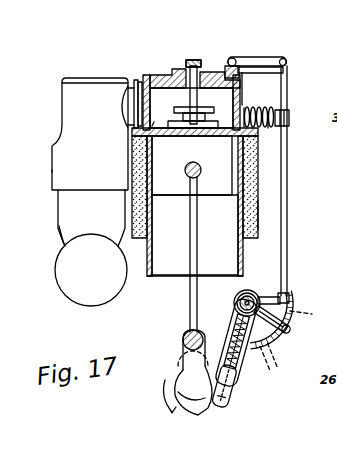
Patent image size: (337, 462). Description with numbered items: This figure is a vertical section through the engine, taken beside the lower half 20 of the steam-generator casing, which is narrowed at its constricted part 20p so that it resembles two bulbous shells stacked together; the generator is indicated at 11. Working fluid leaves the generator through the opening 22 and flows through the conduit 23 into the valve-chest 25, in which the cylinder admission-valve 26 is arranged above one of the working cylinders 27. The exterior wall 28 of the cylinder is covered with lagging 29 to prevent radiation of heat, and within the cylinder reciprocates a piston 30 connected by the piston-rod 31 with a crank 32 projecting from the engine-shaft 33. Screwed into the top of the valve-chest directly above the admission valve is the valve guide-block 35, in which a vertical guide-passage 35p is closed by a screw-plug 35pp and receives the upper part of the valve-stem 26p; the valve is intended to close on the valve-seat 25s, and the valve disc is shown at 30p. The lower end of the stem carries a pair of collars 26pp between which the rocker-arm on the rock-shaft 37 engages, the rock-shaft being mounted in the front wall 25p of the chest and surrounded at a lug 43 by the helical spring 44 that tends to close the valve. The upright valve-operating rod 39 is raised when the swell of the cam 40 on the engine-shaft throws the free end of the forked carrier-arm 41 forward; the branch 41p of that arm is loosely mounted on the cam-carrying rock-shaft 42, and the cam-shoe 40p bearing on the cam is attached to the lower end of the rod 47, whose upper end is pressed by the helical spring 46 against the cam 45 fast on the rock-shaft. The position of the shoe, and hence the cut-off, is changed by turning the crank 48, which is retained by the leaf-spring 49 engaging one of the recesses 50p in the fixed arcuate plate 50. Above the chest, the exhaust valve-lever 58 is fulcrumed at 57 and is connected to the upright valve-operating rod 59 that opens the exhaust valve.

The fuel tank 11 is at (46, 159).
The lower half of the generator casing 20 is at (56, 277).
The constricted part 20p is at (62, 248).
The opening 22 is at (112, 107).
The conduit 23 is at (126, 96).
The valve-chest 25 is at (150, 74).
The valve-seat 25s is at (146, 128).
The front wall of the valve-chest 25p is at (287, 64).
The admission-valve 26 is at (184, 140).
The valve-stem 26p is at (287, 76).
The collars 26pp is at (150, 128).
The working cylinder 27 is at (162, 270).
The exterior wall 28 is at (252, 196).
The lagging 29 is at (260, 216).
The piston 30 is at (180, 195).
The valve disc 30p is at (196, 127).
The piston-rod 31 is at (198, 238).
The crank 32 is at (183, 364).
The engine-shaft 33 is at (182, 344).
The valve guide-block 35 is at (190, 66).
The guide-passage 35p is at (236, 58).
The screw-plug 35pp is at (200, 64).
The rock-shaft 37 is at (290, 118).
The valve-operating rod 39 is at (288, 248).
The cam 40 is at (204, 414).
The cam-shoe 40p is at (234, 404).
The carrier-arm 41 is at (246, 376).
The branch of the carrier-arm 41p is at (287, 292).
The cam-carrying rock-shaft 42 is at (250, 290).
The lug 43 is at (257, 107).
The helical spring 44 is at (270, 126).
The cam 45 is at (236, 296).
The helical spring 46 is at (232, 332).
The rod 47 is at (236, 314).
The crank 48 is at (280, 336).
The leaf-spring 49 is at (292, 330).
The arcuate plate 50 is at (292, 306).
The recess 50p is at (297, 346).
The fulcrum 57 is at (236, 58).
The valve-lever 58 is at (266, 58).
The valve-operating rod 59 is at (288, 100).